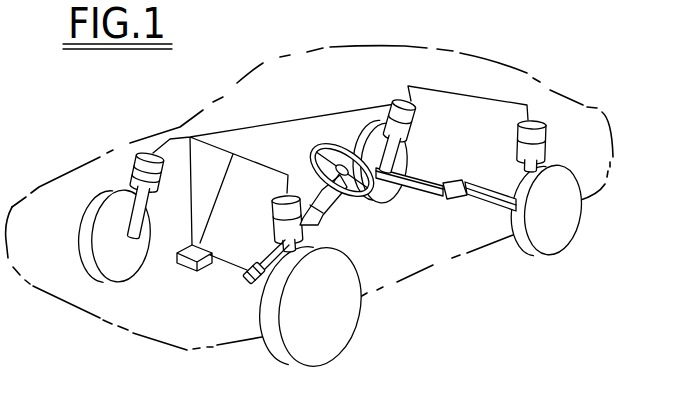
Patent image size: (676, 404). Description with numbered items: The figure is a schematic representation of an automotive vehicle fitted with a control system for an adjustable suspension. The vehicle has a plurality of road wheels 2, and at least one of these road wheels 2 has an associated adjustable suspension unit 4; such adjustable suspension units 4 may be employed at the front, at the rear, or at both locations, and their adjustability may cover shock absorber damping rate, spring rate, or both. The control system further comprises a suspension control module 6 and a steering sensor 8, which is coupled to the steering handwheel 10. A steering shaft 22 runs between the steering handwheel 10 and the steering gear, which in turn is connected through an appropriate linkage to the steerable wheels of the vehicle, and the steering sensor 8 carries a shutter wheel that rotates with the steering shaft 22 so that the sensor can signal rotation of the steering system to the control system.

The road wheels 2 is at (80, 233).
The adjustable suspension unit 4 is at (143, 213).
The suspension control module 6 is at (185, 270).
The steering sensor 8 is at (250, 283).
The steering handwheel 10 is at (357, 200).
The steering shaft 22 is at (272, 245).